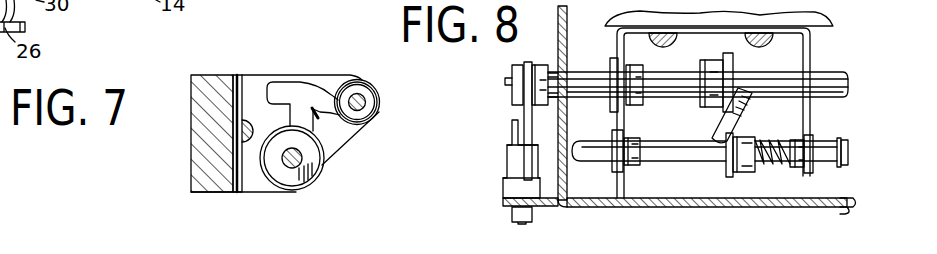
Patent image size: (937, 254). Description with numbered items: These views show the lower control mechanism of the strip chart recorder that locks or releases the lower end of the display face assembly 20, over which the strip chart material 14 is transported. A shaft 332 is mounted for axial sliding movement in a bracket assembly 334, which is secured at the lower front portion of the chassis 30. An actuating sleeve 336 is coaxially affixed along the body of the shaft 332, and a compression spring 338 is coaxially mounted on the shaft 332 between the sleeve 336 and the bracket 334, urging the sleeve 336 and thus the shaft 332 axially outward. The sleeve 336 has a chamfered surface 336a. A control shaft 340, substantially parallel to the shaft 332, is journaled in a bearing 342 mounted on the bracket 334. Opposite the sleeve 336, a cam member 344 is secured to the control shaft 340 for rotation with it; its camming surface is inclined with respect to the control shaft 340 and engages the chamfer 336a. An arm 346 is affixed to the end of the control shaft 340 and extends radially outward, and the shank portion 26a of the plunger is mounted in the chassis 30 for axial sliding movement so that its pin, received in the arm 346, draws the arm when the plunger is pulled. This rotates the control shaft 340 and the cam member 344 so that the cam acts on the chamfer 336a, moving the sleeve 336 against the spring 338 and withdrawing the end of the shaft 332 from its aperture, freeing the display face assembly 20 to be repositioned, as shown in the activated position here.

In FIG. 8, the strip chart material 14 is at (866, 200).
In FIG. 8, the display face assembly 20 is at (594, 200).
In FIG. 8, the shank portion 26a is at (528, 85).
In FIG. 7, the chassis 30 is at (206, 99).
In FIG. 8, the chassis 30 is at (813, 23).
In FIG. 7, the shaft 332 is at (358, 106).
In FIG. 8, the shaft 332 is at (587, 153).
In FIG. 7, the bracket assembly 334 is at (246, 73).
In FIG. 7, the actuating sleeve 336 is at (350, 88).
In FIG. 8, the actuating sleeve 336 is at (741, 145).
In FIG. 7, the chamfered surface 336a is at (372, 86).
In FIG. 8, the chamfered surface 336a is at (726, 170).
In FIG. 8, the compression spring 338 is at (760, 162).
In FIG. 7, the control shaft 340 is at (291, 172).
In FIG. 8, the control shaft 340 is at (820, 83).
In FIG. 8, the bearing 342 is at (634, 74).
In FIG. 7, the cam member 344 is at (336, 160).
In FIG. 8, the cam member 344 is at (739, 65).
In FIG. 7, the arm 346 is at (292, 88).
In FIG. 8, the arm 346 is at (512, 70).